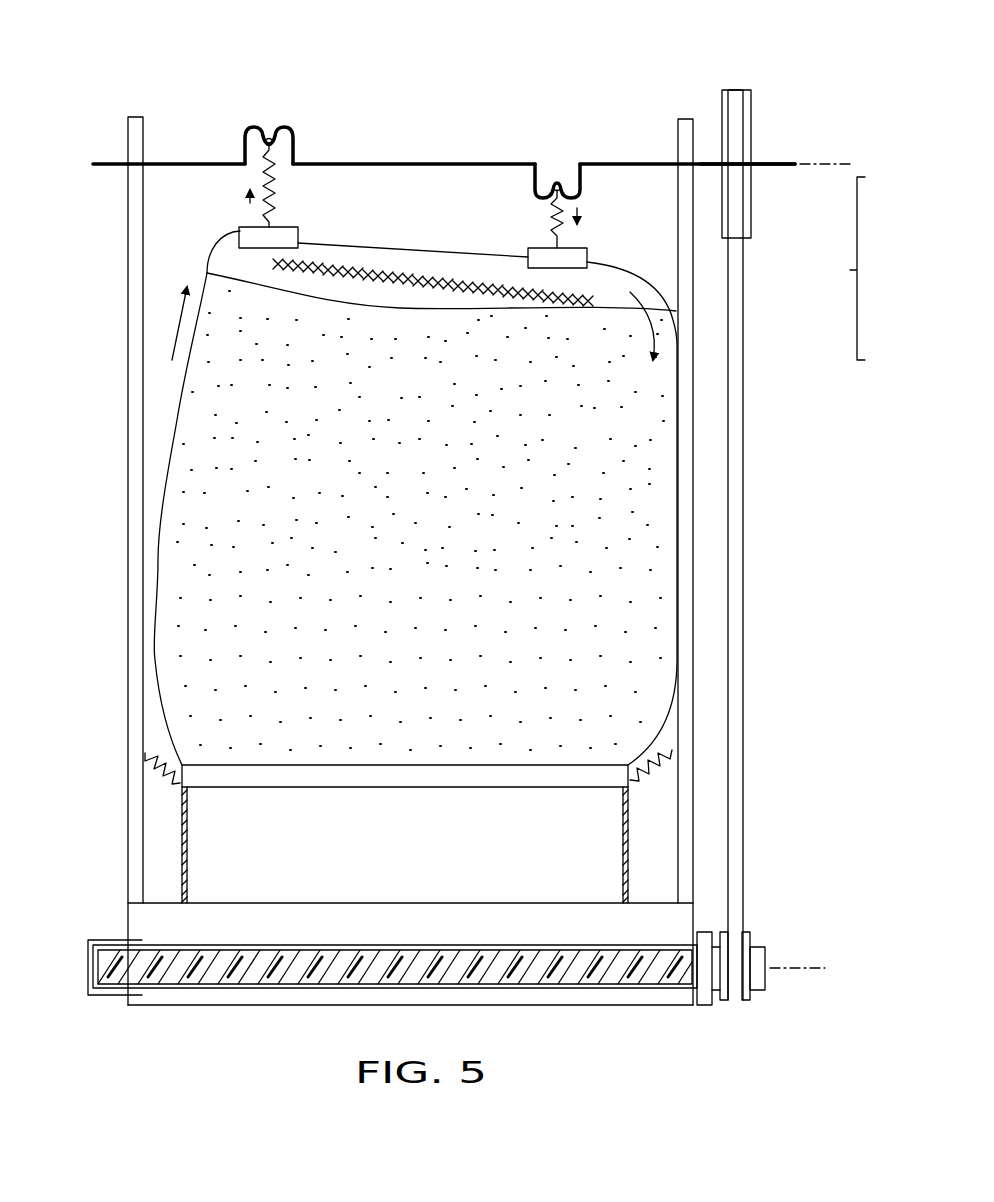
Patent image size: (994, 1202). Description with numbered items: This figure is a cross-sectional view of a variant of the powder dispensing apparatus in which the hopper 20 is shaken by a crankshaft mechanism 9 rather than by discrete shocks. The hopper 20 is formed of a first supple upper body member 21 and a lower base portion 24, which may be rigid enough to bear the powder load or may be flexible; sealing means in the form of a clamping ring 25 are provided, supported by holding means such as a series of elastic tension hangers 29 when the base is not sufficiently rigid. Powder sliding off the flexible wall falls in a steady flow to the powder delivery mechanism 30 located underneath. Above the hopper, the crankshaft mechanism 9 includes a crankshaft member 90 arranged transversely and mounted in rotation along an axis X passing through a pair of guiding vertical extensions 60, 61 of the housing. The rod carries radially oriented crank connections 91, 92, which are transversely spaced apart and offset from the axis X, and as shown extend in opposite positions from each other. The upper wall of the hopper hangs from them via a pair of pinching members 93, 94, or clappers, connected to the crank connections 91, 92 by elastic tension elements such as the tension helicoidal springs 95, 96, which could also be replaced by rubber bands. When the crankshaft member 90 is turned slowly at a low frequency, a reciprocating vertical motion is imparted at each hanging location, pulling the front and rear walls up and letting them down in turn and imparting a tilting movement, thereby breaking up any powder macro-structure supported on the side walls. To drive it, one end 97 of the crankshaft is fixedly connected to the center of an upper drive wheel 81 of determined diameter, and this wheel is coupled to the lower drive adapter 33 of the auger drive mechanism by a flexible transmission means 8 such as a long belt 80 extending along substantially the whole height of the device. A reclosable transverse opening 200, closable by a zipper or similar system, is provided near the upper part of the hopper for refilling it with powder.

The crankshaft mechanism 9 is at (152, 73).
The axis X is at (828, 160).
The crankshaft member 90 is at (112, 165).
The crank connection 91 is at (255, 127).
The crank connection 92 is at (547, 180).
The pinching member 93 is at (297, 227).
The pinching member 94 is at (588, 250).
The tension helicoidal spring 95 is at (273, 188).
The tension helicoidal spring 96 is at (547, 220).
The end of the crankshaft 97 is at (778, 162).
The flexible transmission means 8 is at (869, 268).
The belt 80 is at (743, 343).
The upper drive wheel 81 is at (750, 230).
The guiding vertical extension 60 is at (693, 555).
The guiding vertical extension 61 is at (128, 345).
The hopper 20 is at (78, 635).
The first supple upper body member 21 is at (160, 568).
The lower base portion 24 is at (182, 830).
The clamping ring 25 is at (608, 770).
The elastic tension hanger 29 is at (150, 748).
The powder delivery mechanism 30 is at (66, 902).
The lower drive adapter 33 is at (750, 1003).
The reclosable transverse opening 200 is at (410, 273).